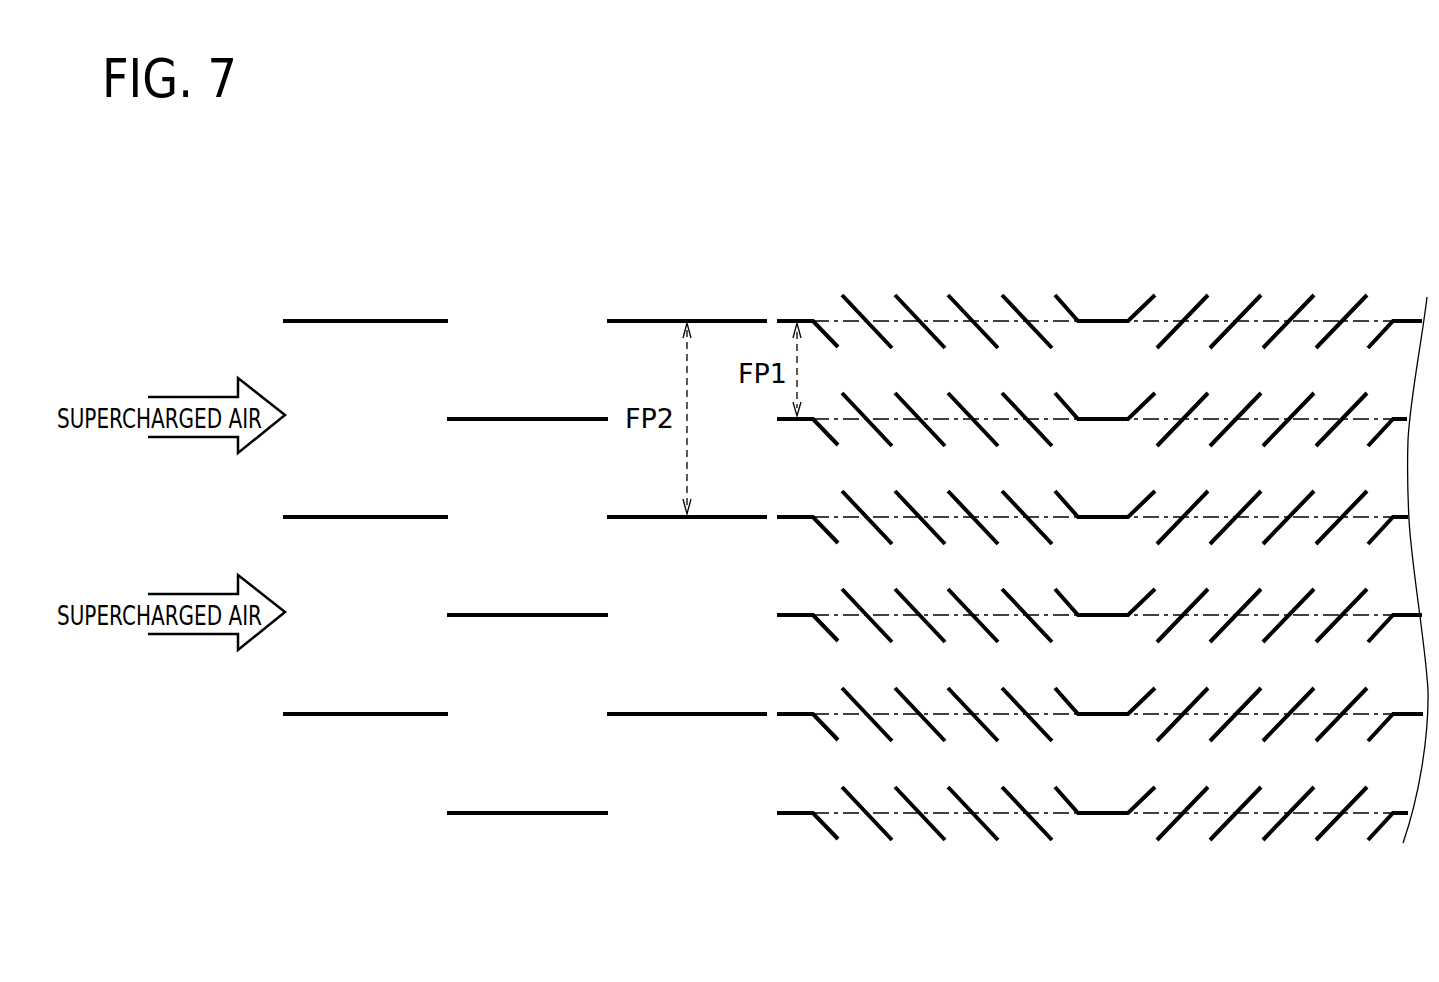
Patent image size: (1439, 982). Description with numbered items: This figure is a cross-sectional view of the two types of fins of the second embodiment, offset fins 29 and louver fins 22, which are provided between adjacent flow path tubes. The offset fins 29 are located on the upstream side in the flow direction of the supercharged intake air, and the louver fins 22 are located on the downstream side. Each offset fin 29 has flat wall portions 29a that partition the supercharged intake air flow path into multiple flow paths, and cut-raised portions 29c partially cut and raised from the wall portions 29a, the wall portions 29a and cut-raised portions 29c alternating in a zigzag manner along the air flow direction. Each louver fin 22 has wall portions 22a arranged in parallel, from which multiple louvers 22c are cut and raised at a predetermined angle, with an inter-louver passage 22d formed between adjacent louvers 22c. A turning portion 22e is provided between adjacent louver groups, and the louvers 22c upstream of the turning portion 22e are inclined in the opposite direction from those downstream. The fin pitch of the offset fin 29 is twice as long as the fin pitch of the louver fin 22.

The offset fin 29 is at (525, 570).
The wall portion 29a is at (362, 321).
The cut-raised portion 29c is at (522, 418).
The louver fin 22 is at (1102, 552).
The wall portion 22a is at (1322, 320).
The louver 22c is at (1018, 308).
The inter-louver passage 22d is at (985, 307).
The turning portion 22e is at (1103, 321).